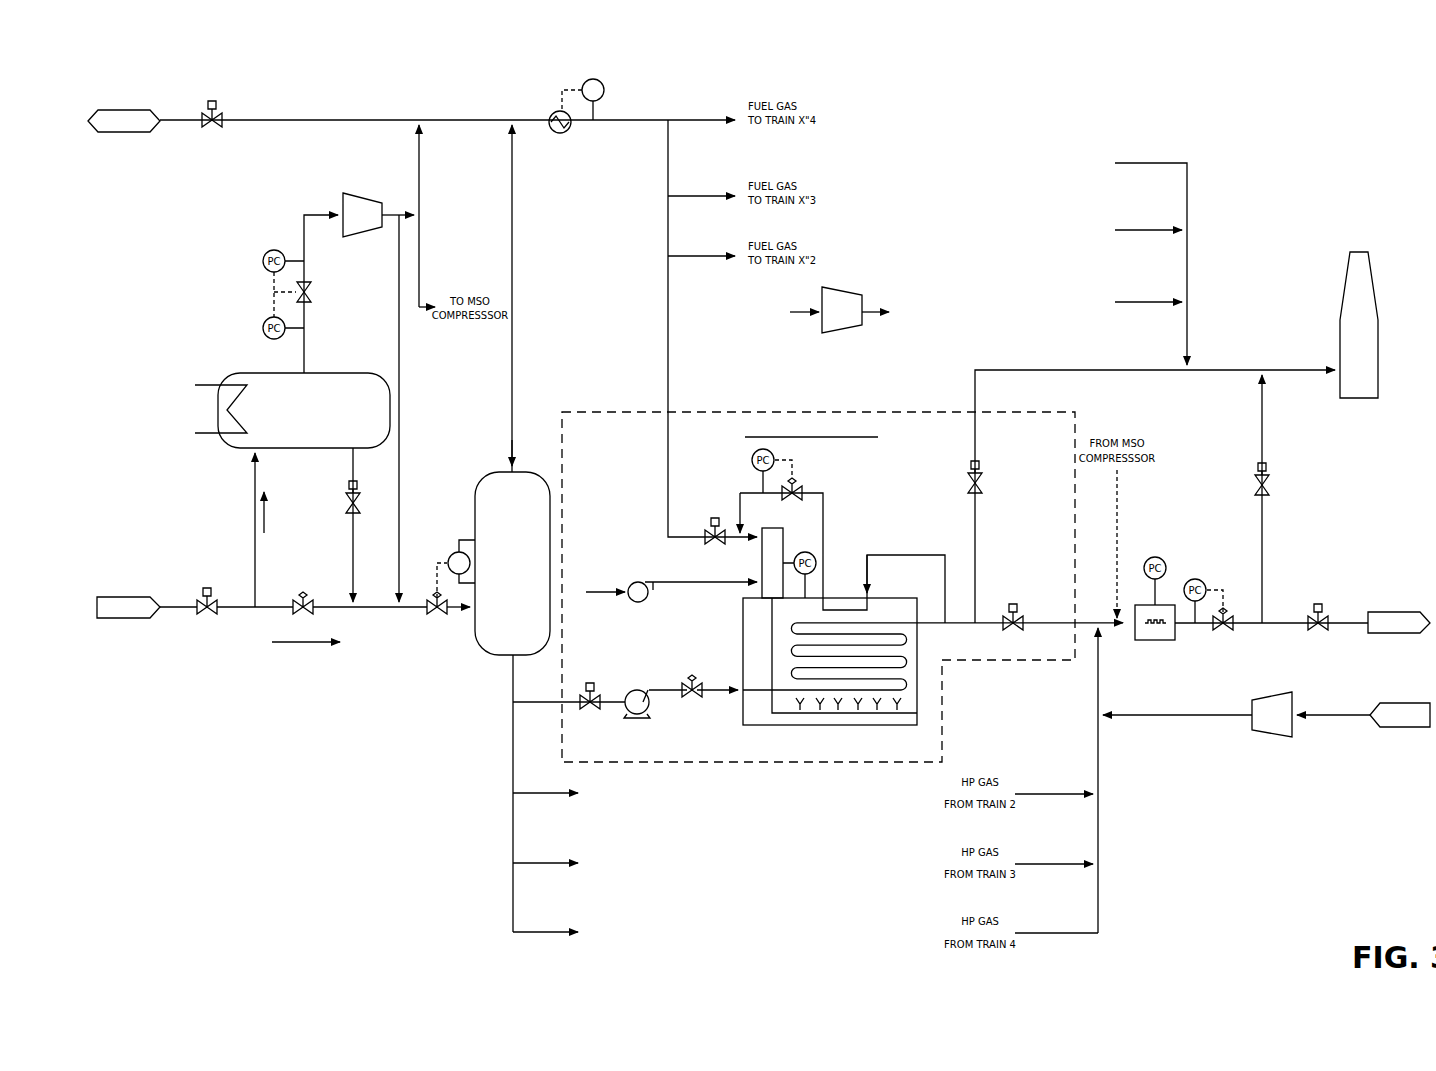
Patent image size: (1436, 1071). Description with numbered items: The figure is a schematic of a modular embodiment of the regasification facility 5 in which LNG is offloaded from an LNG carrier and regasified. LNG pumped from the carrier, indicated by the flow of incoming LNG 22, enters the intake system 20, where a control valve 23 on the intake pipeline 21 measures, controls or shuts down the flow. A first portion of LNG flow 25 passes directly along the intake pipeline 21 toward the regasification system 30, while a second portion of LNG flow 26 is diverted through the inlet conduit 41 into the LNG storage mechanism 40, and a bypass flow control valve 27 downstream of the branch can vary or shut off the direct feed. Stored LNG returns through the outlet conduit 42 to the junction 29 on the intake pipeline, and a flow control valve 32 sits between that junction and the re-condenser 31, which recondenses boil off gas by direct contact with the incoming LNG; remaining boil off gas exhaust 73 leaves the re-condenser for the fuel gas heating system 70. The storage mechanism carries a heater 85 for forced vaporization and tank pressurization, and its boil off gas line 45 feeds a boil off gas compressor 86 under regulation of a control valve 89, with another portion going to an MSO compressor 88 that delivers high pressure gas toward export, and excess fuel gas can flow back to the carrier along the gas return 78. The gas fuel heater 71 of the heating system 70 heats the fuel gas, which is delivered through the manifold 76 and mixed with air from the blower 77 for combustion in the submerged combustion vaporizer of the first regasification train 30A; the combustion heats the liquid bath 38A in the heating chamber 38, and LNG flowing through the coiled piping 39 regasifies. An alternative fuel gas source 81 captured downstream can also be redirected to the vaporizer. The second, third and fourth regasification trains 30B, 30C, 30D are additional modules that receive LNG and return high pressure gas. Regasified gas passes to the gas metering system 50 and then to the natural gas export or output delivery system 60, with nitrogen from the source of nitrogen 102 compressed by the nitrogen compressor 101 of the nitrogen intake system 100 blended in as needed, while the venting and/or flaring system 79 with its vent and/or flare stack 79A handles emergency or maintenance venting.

The regasification facility 5 is at (390, 781).
The intake system 20 is at (175, 626).
The intake pipeline 21 is at (247, 610).
The flow of incoming LNG 22 is at (122, 596).
The control valve 23 is at (207, 598).
The first portion of LNG flow 25 is at (298, 643).
The second portion of LNG flow 26 is at (263, 508).
The bypass flow control valve 27 is at (303, 598).
The junction 29 is at (358, 613).
The regasification system 30 is at (759, 886).
The first regasification train 30A is at (779, 407).
The second regasification train 30B is at (634, 791).
The third regasification train 30C is at (634, 861).
The fourth regasification train 30D is at (636, 923).
The re-condenser 31 is at (473, 510).
The flow control valve 32 is at (467, 613).
The heating chamber 38 is at (933, 618).
The liquid bath 38A is at (900, 610).
The coiled piping 39 is at (905, 667).
The LNG storage mechanism 40 is at (313, 455).
The inlet conduit 41 is at (255, 477).
The outlet conduit 42 is at (357, 468).
The boil off gas line 45 is at (304, 230).
The gas metering system 50 is at (928, 285).
The natural gas export or output delivery system 60 is at (1396, 604).
The fuel gas heating system 70 is at (563, 111).
The gas fuel heater 71 is at (572, 125).
The boil off gas exhaust 73 is at (513, 248).
The manifold 76 is at (785, 537).
The blower 77 is at (647, 582).
The gas return 78 is at (122, 110).
The venting and/or flaring system 79 is at (1291, 359).
The vent and/or flare stack 79A is at (1345, 277).
The alternative fuel gas source 81 is at (830, 550).
The heater 85 is at (207, 383).
The boil off gas compressor 86 is at (363, 193).
The MSO compressor 88 is at (842, 289).
The control valve 89 is at (305, 295).
The nitrogen intake system 100 is at (1226, 733).
The nitrogen compressor 101 is at (1295, 728).
The source of nitrogen 102 is at (1433, 723).